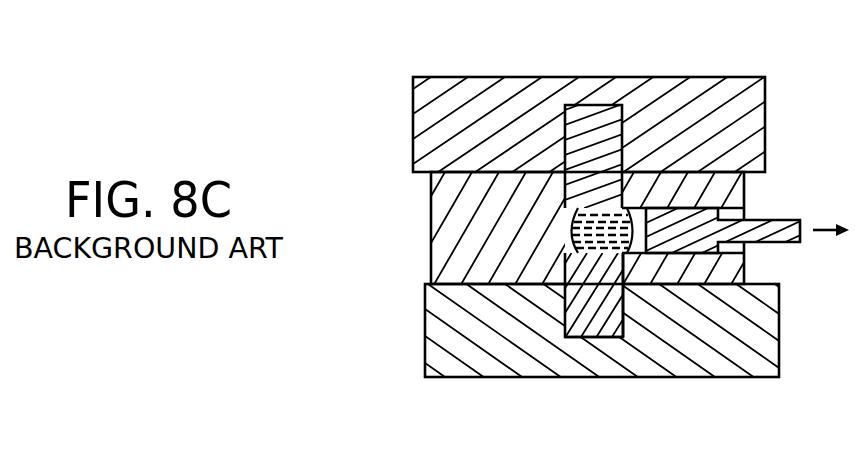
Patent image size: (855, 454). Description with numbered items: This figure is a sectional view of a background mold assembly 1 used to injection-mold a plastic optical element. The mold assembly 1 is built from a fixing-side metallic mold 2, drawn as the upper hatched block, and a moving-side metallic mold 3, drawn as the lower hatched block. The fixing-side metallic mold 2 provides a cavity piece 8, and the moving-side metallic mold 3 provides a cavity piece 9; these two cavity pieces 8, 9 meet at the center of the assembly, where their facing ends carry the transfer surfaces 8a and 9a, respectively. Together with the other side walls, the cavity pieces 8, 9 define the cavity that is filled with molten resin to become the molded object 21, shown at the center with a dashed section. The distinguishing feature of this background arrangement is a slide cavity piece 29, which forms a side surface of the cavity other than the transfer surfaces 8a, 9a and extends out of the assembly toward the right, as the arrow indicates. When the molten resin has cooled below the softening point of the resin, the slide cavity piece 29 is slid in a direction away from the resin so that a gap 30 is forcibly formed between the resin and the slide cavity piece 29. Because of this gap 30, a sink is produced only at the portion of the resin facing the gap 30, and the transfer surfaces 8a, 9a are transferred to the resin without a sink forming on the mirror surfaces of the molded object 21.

The mold assembly 1 is at (409, 72).
The fixing-side metallic mold 2 is at (422, 134).
The moving-side metallic mold 3 is at (450, 356).
The cavity piece 8 is at (590, 208).
The transfer surface 8a is at (636, 207).
The cavity piece 9 is at (607, 337).
The transfer surface 9a is at (575, 335).
The molded object 21 is at (612, 284).
The slide cavity piece 29 is at (778, 220).
The gap 30 is at (642, 205).